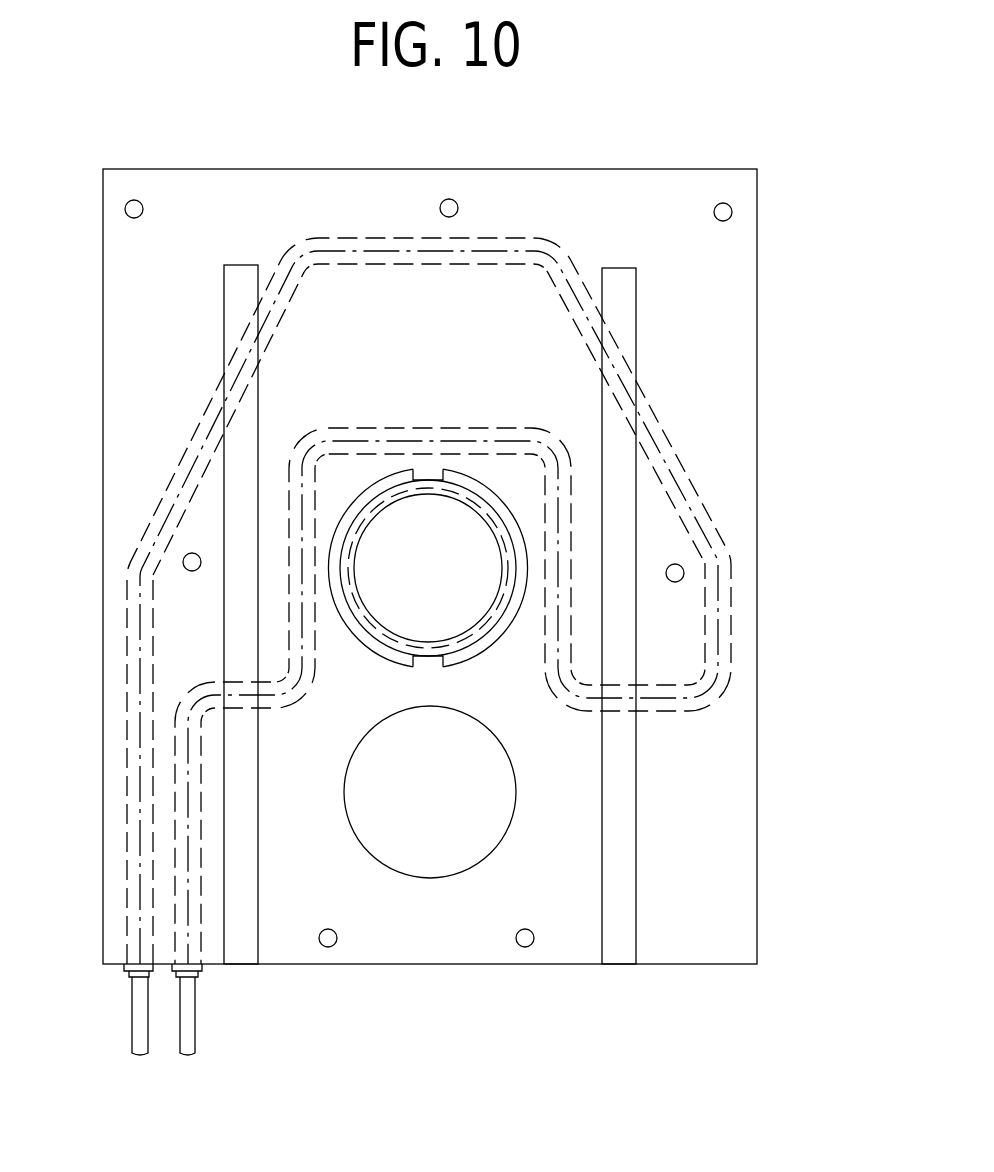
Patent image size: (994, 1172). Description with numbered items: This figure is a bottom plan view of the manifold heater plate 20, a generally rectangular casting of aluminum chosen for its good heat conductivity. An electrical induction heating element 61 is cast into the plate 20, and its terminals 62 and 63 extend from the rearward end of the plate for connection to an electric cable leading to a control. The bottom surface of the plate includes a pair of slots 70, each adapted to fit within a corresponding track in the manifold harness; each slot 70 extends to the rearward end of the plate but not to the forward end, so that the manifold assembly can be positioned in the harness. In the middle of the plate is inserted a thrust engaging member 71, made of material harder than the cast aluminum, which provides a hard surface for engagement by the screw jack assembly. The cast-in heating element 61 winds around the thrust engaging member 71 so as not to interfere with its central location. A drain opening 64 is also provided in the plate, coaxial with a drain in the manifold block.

The manifold heater plate 20 is at (760, 333).
The electrical induction heating element 61 is at (152, 537).
The terminal 62 is at (195, 1040).
The terminal 63 is at (130, 1035).
The drain opening 64 is at (468, 866).
The slot 70 is at (632, 292).
The thrust engaging member 71 is at (462, 605).